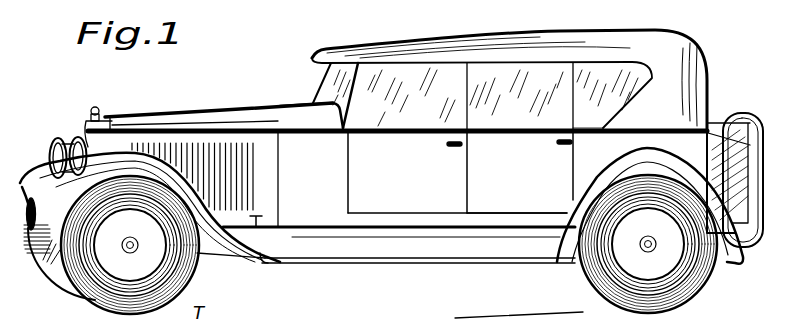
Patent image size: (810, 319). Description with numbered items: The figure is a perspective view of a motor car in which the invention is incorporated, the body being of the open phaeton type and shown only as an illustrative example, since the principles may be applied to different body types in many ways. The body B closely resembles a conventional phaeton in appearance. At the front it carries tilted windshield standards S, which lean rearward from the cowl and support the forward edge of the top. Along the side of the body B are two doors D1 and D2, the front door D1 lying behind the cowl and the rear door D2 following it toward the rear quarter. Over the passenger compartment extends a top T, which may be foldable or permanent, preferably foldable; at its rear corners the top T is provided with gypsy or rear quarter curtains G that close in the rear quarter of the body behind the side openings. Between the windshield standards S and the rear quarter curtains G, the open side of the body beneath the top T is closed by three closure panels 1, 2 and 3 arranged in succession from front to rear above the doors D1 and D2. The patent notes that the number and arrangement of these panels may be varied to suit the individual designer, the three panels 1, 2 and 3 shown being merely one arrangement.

The top T is at (383, 45).
The windshield standards S is at (328, 81).
The closure panel 1 is at (420, 113).
The closure panel 2 is at (527, 113).
The closure panel 3 is at (605, 107).
The gypsy or rear quarter curtains G is at (683, 100).
The body B is at (372, 218).
The door D1 is at (427, 207).
The door D2 is at (535, 202).